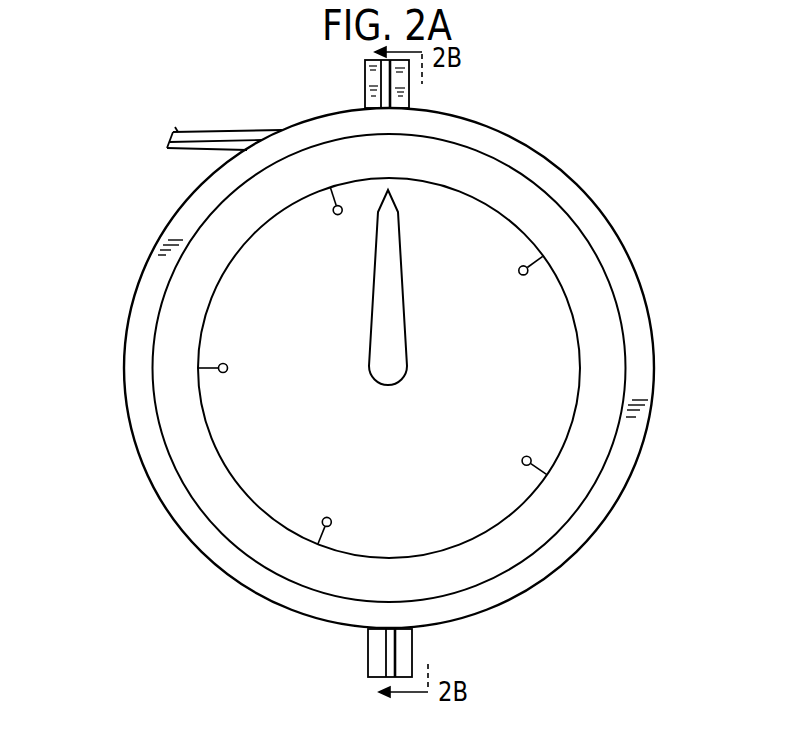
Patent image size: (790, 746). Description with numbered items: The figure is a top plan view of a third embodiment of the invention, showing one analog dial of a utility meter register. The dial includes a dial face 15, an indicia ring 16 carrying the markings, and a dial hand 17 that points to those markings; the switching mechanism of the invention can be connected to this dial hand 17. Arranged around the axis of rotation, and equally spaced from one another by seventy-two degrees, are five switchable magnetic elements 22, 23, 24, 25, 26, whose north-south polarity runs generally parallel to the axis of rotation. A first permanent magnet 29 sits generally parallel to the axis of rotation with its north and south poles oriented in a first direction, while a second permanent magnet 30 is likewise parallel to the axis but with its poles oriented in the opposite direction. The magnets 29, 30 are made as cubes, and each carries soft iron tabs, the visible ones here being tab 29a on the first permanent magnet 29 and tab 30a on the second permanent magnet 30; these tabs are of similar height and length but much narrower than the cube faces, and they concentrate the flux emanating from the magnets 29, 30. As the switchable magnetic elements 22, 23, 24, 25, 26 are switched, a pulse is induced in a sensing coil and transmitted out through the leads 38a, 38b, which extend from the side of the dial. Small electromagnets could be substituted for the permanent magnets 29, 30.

The dial face 15 is at (356, 433).
The indicia ring 16 is at (574, 325).
The dial hand 17 is at (402, 288).
The switchable magnetic element 22 is at (331, 187).
The switchable magnetic element 23 is at (542, 258).
The switchable magnetic element 24 is at (546, 474).
The switchable magnetic element 25 is at (317, 544).
The switchable magnetic element 26 is at (198, 370).
The first permanent magnet 29 is at (409, 94).
The soft iron tab 29a is at (381, 80).
The second permanent magnet 30 is at (413, 660).
The soft iron tab 30a is at (390, 647).
The lead 38a is at (190, 129).
The lead 38b is at (182, 153).